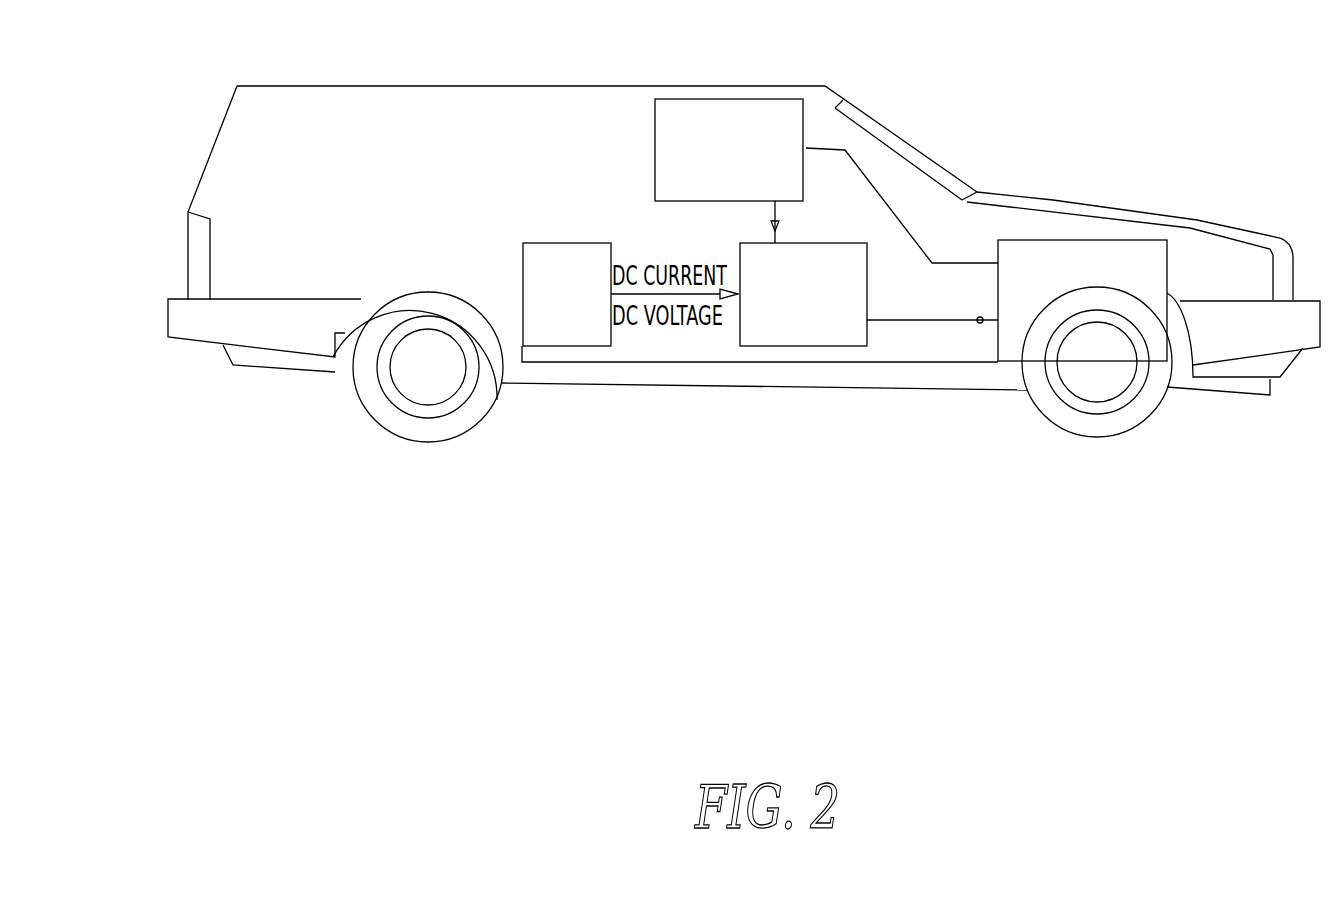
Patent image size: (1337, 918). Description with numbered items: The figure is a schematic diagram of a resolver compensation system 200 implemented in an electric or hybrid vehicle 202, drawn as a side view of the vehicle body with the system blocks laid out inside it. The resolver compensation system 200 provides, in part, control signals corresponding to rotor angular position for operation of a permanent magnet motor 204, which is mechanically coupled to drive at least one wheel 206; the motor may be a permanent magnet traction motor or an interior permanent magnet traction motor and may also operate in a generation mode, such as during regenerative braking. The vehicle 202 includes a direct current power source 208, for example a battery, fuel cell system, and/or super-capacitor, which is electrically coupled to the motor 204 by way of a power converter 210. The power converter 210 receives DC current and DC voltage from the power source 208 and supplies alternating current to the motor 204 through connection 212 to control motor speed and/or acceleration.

The resolver compensation system 200 is at (655, 148).
The electric or hybrid vehicle 202 is at (568, 86).
The permanent magnet motor 204 is at (1120, 242).
The wheel 206 is at (1098, 437).
The direct current power source 208 is at (565, 243).
The power converter 210 is at (757, 243).
The connection 212 is at (885, 320).